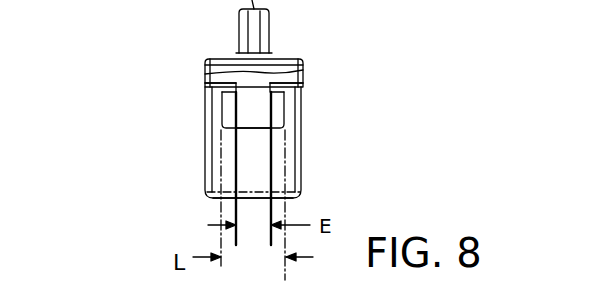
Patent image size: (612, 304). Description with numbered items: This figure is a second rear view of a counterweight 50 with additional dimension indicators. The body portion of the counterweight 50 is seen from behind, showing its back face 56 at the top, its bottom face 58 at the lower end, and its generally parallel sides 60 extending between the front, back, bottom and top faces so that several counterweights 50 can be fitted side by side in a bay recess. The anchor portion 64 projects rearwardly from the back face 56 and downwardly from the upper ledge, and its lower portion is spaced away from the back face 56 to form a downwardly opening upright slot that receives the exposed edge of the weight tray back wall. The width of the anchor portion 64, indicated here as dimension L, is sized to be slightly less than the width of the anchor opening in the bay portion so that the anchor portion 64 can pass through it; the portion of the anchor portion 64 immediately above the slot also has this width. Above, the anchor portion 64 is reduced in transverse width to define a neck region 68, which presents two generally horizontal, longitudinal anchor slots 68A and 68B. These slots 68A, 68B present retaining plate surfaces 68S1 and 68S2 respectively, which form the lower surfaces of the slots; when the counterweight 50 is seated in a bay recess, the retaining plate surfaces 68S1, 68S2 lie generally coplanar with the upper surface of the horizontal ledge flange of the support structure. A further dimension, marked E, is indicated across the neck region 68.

The counterweight 50 is at (141, 130).
The back face 56 is at (283, 153).
The bottom face 58 is at (283, 202).
The sides 60 is at (205, 140).
The anchor portion 64 is at (254, 133).
The neck region 68 is at (256, 85).
The anchor slot 68A is at (300, 86).
The anchor slot 68B is at (208, 86).
The retaining plate surface 68S1 is at (286, 93).
The retaining plate surface 68S2 is at (221, 92).